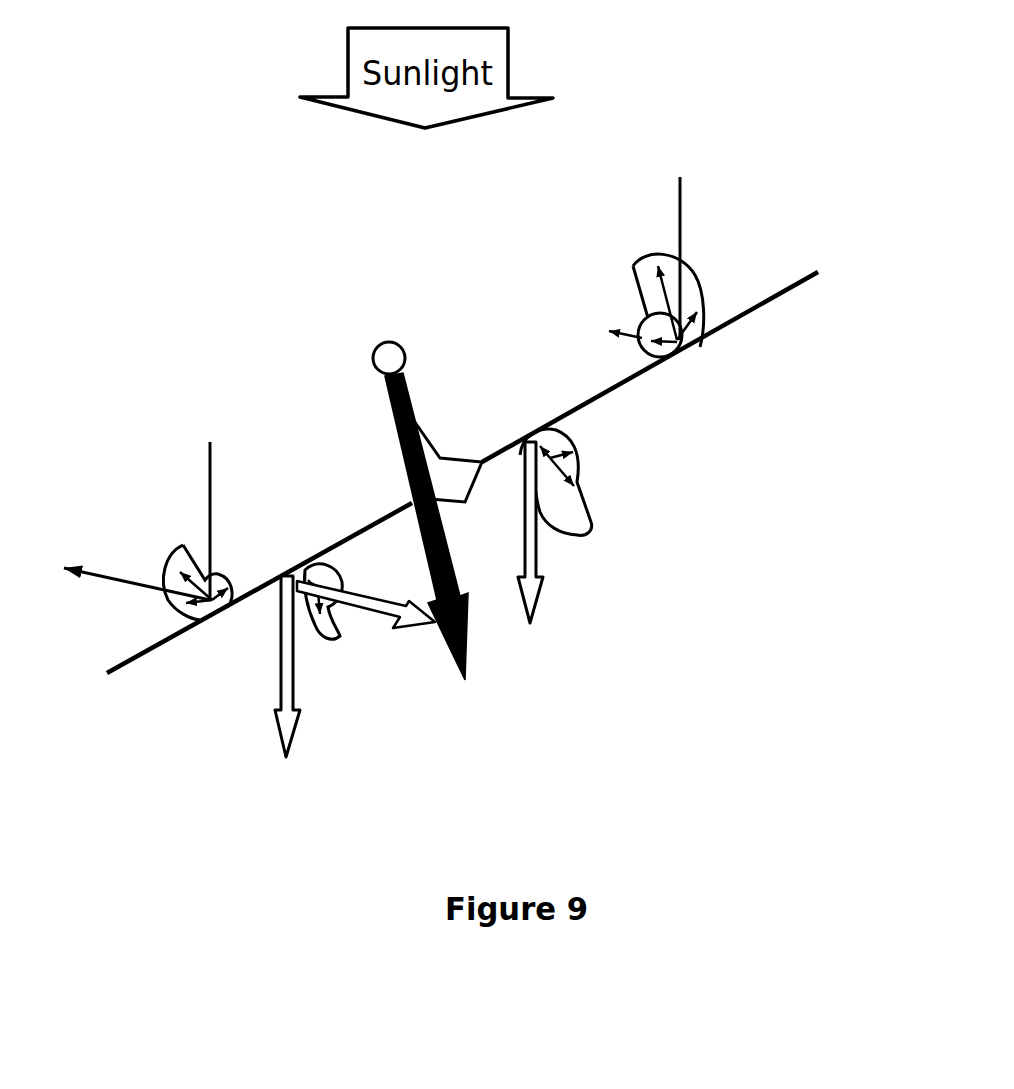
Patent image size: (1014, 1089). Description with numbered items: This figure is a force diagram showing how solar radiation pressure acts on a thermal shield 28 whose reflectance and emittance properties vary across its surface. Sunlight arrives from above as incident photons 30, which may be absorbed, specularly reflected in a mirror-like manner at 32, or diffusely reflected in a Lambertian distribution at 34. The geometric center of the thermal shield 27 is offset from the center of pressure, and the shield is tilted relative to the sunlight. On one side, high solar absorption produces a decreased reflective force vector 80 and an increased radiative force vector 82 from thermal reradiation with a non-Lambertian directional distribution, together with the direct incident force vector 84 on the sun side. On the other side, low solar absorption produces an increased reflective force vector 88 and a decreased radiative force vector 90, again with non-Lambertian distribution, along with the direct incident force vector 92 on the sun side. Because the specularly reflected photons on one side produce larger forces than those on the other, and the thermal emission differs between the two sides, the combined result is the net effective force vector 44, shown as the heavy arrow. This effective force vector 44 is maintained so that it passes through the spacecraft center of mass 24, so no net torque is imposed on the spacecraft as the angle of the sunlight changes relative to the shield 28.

The center of mass 24 is at (373, 356).
The geometric center of the thermal shield 27 is at (455, 463).
The shield 28 is at (772, 303).
The incident photons 30 is at (688, 195).
The specularly reflected photons 32 is at (608, 328).
The diffusely reflected photons 34 is at (695, 270).
The effective force vector 44 is at (467, 628).
The decreased reflective force vector 80 is at (590, 453).
The increased radiative force vector 82 is at (590, 503).
The direct incident force vector 84 is at (548, 572).
The increased reflective force vector 88 is at (393, 630).
The decreased radiative force vector 90 is at (340, 637).
The direct incident force vector 92 is at (276, 692).